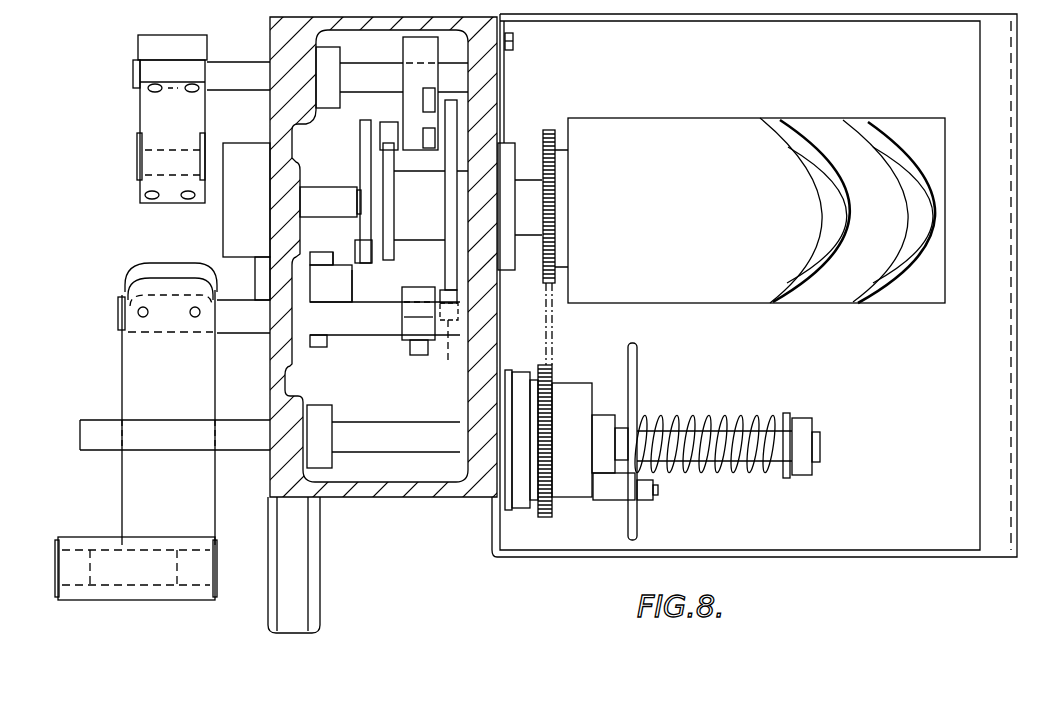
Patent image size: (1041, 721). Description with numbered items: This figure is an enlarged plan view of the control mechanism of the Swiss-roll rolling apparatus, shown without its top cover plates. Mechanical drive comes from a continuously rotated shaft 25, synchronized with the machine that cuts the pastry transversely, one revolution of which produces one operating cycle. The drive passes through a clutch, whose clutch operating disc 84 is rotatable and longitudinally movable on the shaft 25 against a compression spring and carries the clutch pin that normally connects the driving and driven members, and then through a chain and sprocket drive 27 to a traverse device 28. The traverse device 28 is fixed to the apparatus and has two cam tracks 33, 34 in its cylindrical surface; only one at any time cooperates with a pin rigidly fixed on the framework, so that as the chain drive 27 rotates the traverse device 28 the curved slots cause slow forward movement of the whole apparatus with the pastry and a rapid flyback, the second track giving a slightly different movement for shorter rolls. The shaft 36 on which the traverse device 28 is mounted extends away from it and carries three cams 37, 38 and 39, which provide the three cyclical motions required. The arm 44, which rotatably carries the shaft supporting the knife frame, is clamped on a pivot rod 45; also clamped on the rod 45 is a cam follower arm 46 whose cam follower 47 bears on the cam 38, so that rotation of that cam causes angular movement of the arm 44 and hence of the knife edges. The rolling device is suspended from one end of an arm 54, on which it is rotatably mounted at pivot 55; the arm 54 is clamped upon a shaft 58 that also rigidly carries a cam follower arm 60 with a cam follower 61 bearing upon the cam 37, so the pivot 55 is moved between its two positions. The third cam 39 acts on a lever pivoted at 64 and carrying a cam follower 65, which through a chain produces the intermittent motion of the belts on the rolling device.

The continuously rotated shaft 25 is at (95, 432).
The chain and sprocket drive 27 is at (548, 338).
The traverse device 28 is at (680, 128).
The cam track 33 is at (872, 130).
The cam track 34 is at (778, 128).
The shaft 36 is at (523, 235).
The cam 37 is at (452, 174).
The cam 38 is at (388, 208).
The cam 39 is at (366, 147).
The arm 44 is at (158, 112).
The pivot rod 45 is at (235, 72).
The cam follower arm 46 is at (410, 108).
The cam follower 47 is at (383, 134).
The arm 54 is at (135, 377).
The pivot 55 is at (204, 563).
The shaft 58 is at (358, 317).
The cam follower arm 60 is at (418, 352).
The cam follower 61 is at (451, 337).
The pivot 64 is at (352, 287).
The cam follower 65 is at (370, 262).
The clutch operating disc 84 is at (637, 380).